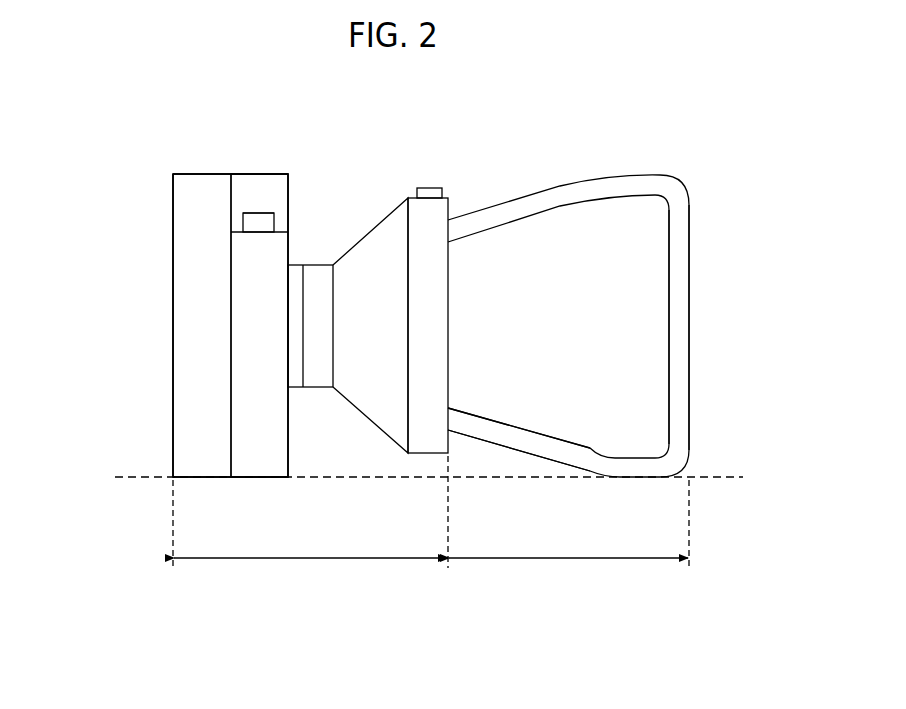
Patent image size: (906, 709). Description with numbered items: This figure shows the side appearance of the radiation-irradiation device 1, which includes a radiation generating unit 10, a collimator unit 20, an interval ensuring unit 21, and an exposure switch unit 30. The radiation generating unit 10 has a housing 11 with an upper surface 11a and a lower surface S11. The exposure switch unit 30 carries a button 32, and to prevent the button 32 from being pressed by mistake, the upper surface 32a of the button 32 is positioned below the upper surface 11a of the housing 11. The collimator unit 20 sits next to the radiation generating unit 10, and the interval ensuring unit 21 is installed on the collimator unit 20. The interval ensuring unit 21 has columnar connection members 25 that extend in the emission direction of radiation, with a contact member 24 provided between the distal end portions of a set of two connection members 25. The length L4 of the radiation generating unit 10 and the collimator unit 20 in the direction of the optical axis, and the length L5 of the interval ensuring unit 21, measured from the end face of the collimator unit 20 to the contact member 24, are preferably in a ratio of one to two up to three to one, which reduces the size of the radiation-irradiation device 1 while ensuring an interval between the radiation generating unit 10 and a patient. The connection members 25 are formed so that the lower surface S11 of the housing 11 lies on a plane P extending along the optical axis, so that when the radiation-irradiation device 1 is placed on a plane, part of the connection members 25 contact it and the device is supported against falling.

The radiation-irradiation device 1 is at (92, 197).
The radiation generating unit 10 is at (200, 152).
The housing 11 is at (172, 323).
The upper surface 11a is at (252, 172).
The collimator unit 20 is at (372, 408).
The interval ensuring unit 21 is at (557, 160).
The contact member 24 is at (682, 279).
The connection members 25 is at (508, 433).
The exposure switch unit 30 is at (261, 467).
The button 32 is at (265, 222).
The upper surface 32a is at (265, 211).
The lower surface S11 is at (200, 483).
The length L4 is at (310, 525).
The length L5 is at (569, 537).
The plane P is at (720, 478).